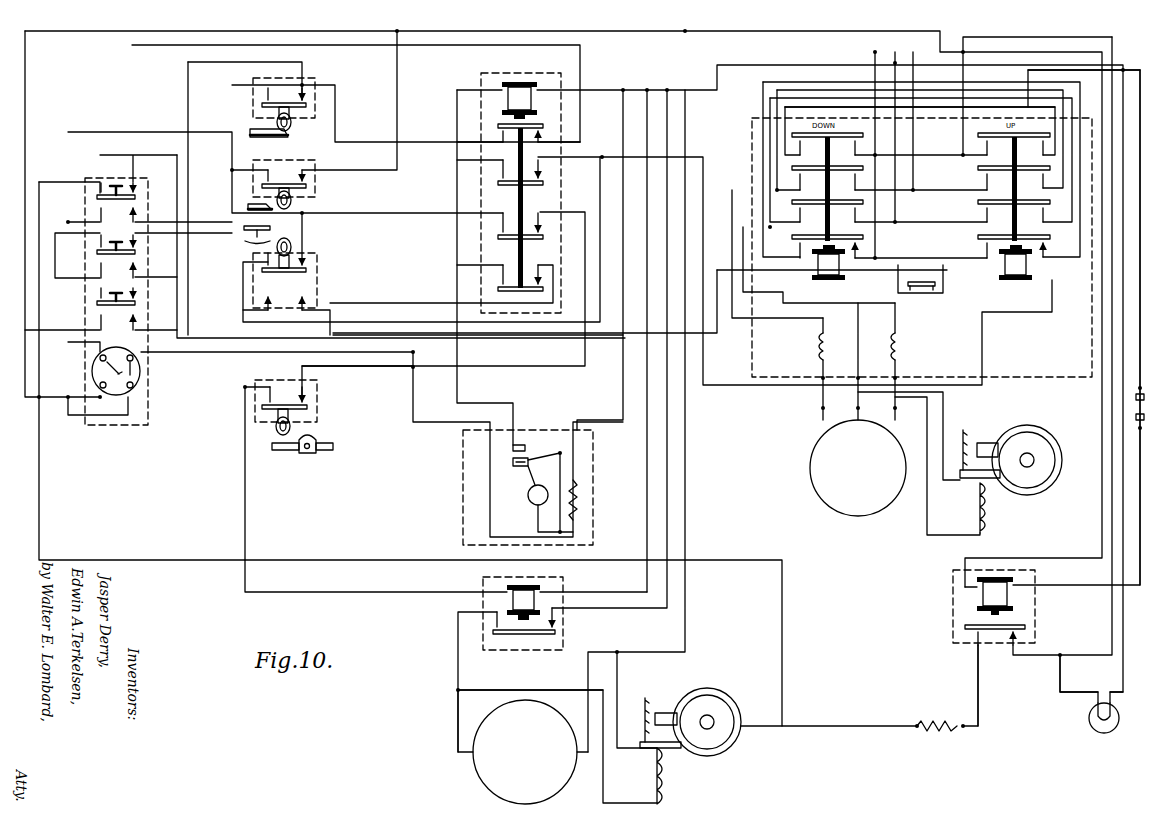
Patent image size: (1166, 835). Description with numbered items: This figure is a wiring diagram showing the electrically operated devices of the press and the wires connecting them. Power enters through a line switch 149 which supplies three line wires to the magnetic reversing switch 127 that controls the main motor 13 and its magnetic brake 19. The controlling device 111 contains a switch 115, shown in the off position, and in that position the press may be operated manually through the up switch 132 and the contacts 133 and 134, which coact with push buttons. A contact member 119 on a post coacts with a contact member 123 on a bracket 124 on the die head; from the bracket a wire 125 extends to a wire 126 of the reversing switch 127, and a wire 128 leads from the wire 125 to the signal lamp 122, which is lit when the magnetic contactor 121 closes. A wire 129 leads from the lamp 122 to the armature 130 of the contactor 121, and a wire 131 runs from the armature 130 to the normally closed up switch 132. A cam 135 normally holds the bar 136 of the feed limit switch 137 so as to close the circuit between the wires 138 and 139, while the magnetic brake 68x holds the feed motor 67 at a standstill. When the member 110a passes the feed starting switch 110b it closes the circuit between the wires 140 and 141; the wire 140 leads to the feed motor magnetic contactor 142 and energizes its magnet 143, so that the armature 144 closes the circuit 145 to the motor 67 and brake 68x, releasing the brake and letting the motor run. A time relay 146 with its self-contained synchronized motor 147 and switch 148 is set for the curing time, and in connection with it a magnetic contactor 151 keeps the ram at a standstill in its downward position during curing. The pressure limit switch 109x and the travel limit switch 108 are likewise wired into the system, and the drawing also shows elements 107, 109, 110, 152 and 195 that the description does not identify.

The pressure limit switch 109x is at (305, 75).
The relay armature plate 109 is at (262, 138).
The travel limit switch 108 is at (300, 158).
The contact plate 107 is at (248, 206).
The magnetic brake 19 is at (270, 230).
The cam 135 is at (291, 242).
The feed limit switch 137 is at (317, 258).
The bar 136 is at (284, 250).
The wire 138 is at (262, 298).
The wire 139 is at (306, 298).
The up switch 132 is at (136, 190).
The contact 133 is at (137, 252).
The contact 134 is at (137, 302).
The switch 115 is at (141, 378).
The controlling device 111 is at (116, 314).
The wire 140 is at (268, 382).
The feed starting switch 110b is at (255, 418).
The member 110a is at (312, 435).
The limit switch bar 110 is at (283, 450).
The wire 141 is at (370, 372).
The magnetic contactor 151 is at (562, 79).
The time relay 146 is at (593, 512).
The switch 148 is at (535, 446).
The synchronized motor 147 is at (527, 484).
The magnetic contactor 142 is at (506, 610).
The magnet 143 is at (517, 604).
The armature 144 is at (524, 639).
The circuit 145 is at (448, 722).
The wire 125 is at (1137, 68).
The motor 67 is at (473, 765).
The brake coil 195 is at (646, 772).
The magnetic brake 68x is at (730, 695).
The magnetic reversing switch 127 is at (752, 140).
The wire 126 is at (975, 102).
The contact 152 is at (922, 291).
The line switch 149 is at (893, 12).
The motor 13 is at (812, 484).
The magnetic contactor 121 is at (952, 603).
The armature 130 is at (1026, 625).
The wire 131 is at (979, 682).
The wire 128 is at (1122, 672).
The wire 129 is at (1058, 690).
The signal lamp 122 is at (1089, 725).
The bracket 124 is at (1140, 594).
The contact member 123 is at (1149, 386).
The contact member 119 is at (1146, 422).